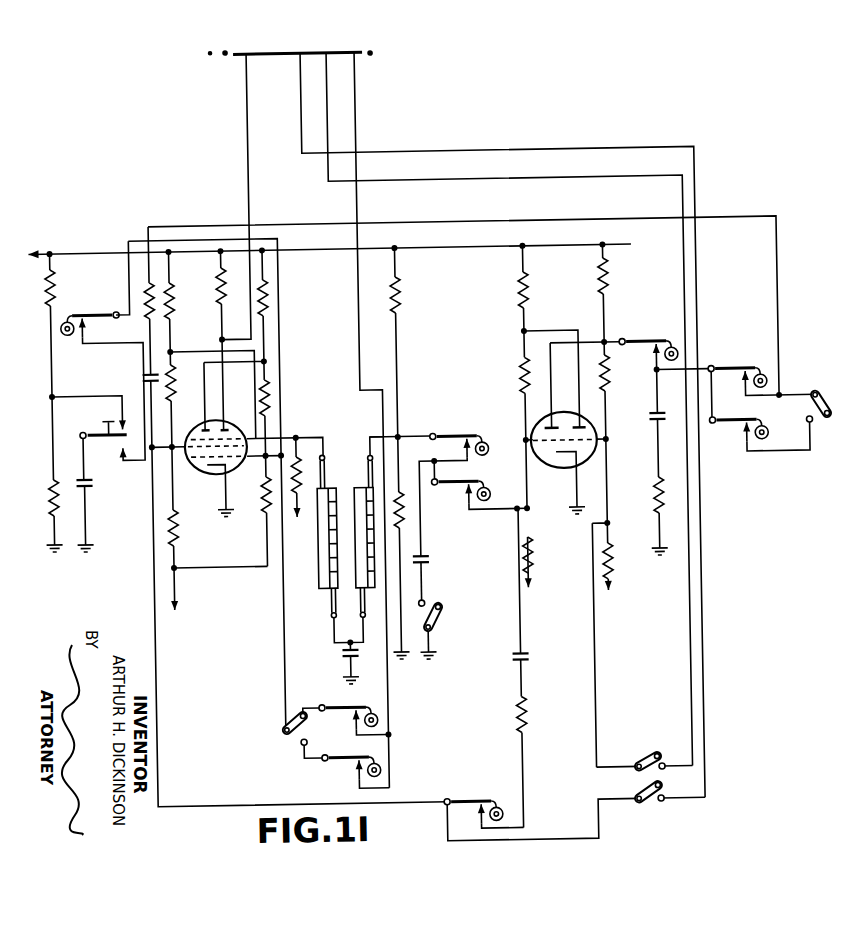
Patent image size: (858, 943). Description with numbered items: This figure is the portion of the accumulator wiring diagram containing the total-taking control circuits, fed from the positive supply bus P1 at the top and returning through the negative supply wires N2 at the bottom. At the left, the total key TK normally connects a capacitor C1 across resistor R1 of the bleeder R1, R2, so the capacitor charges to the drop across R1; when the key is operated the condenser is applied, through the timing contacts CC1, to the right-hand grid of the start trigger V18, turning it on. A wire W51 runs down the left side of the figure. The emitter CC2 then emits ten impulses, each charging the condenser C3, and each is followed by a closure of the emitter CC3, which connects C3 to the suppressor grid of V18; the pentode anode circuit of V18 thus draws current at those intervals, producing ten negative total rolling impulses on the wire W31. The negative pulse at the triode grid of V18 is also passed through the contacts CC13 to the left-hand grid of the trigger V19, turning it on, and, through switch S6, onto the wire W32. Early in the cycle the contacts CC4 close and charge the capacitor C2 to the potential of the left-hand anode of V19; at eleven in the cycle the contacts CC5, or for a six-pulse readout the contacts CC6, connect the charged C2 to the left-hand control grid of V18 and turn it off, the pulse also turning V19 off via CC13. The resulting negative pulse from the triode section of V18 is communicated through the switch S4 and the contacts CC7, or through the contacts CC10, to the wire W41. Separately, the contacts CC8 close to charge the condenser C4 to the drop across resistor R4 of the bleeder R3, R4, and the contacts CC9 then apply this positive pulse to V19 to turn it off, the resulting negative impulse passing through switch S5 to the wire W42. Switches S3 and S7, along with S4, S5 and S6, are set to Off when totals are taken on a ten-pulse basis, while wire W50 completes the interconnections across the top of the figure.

The positive supply wire P1 is at (329, 240).
The wire W31 is at (251, 70).
The wire W41 is at (363, 80).
The wire W42 is at (335, 117).
The wire W32 is at (306, 123).
The wire W50 is at (475, 222).
The wire W51 is at (284, 312).
The bleeder resistor R2 is at (60, 282).
The bleeder resistor R1 is at (61, 497).
The timing contacts CC1 is at (103, 307).
The total key TK is at (106, 414).
The capacitor C1 is at (93, 476).
The start trigger V18 is at (221, 465).
The negative supply wire N2 is at (393, 567).
The emitter CC3 is at (318, 566).
The emitter CC2 is at (362, 566).
The condenser C3 is at (347, 652).
The switch S4 is at (280, 722).
The contacts CC10 is at (368, 707).
The contacts CC7 is at (344, 769).
The bleeder resistor R3 is at (404, 289).
The bleeder resistor R4 is at (404, 512).
The contacts CC8 is at (477, 436).
The contacts CC9 is at (477, 482).
The condenser C4 is at (430, 557).
The switch S7 is at (438, 630).
The trigger V19 is at (573, 471).
The contacts CC4 is at (662, 342).
The capacitor C2 is at (655, 420).
The contacts CC5 is at (761, 372).
The contacts CC6 is at (744, 431).
The switch S3 is at (822, 400).
The contacts CC13 is at (488, 799).
The switch S5 is at (641, 765).
The switch S6 is at (640, 812).